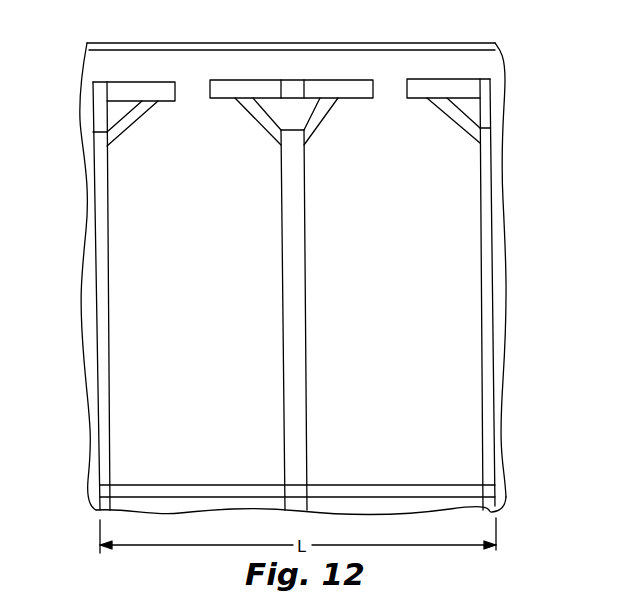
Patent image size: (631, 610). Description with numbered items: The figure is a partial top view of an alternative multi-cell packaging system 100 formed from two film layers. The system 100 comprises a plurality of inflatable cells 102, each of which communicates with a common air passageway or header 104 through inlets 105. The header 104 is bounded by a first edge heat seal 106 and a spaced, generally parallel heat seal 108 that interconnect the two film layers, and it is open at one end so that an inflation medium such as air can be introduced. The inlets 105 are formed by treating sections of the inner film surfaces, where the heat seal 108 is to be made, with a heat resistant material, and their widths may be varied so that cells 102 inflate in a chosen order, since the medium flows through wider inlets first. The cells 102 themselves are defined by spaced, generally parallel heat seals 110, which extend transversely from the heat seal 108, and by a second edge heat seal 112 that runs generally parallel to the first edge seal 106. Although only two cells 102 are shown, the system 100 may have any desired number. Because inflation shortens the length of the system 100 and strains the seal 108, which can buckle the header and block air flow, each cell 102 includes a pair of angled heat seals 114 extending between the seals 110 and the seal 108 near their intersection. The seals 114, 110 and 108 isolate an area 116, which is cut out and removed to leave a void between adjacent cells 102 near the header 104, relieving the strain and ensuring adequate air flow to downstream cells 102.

The multi-cell packaging system 100 is at (522, 52).
The inflatable cell 102 is at (212, 401).
The header 104 is at (250, 65).
The inlet 105 is at (192, 88).
The first edge heat seal 106 is at (295, 43).
The heat seal 108 is at (159, 91).
The heat seal 110 is at (103, 287).
The second edge heat seal 112 is at (387, 490).
The heat seal 114 is at (120, 127).
The area 116 is at (105, 112).